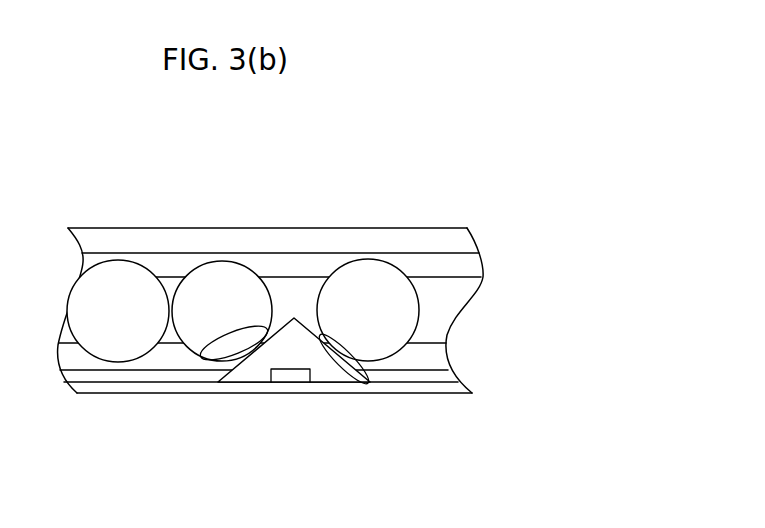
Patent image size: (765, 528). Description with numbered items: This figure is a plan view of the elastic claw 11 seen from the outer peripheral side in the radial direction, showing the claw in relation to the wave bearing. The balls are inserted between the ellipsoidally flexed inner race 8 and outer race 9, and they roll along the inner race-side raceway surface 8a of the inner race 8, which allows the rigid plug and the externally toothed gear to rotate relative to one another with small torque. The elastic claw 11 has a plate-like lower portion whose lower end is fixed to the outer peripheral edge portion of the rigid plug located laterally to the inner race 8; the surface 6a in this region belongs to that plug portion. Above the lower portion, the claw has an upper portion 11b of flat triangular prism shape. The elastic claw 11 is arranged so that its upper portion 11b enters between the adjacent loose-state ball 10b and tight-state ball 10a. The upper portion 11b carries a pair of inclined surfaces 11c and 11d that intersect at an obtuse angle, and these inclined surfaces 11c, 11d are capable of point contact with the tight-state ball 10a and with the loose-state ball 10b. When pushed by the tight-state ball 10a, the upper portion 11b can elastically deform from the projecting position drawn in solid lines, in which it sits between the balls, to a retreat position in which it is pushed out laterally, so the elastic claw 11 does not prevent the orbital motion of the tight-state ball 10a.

The substrate surface layer 6a is at (460, 375).
The inner race 8 is at (452, 323).
The inner race-side raceway surface 8a is at (435, 298).
The outer race 9 is at (143, 228).
The tight-state ball 10a is at (390, 262).
The loose-state ball 10b is at (147, 270).
The elastic claw 11 is at (248, 385).
The upper portion 11b is at (318, 375).
The inclined surface 11c is at (263, 325).
The inclined surface 11d is at (320, 335).